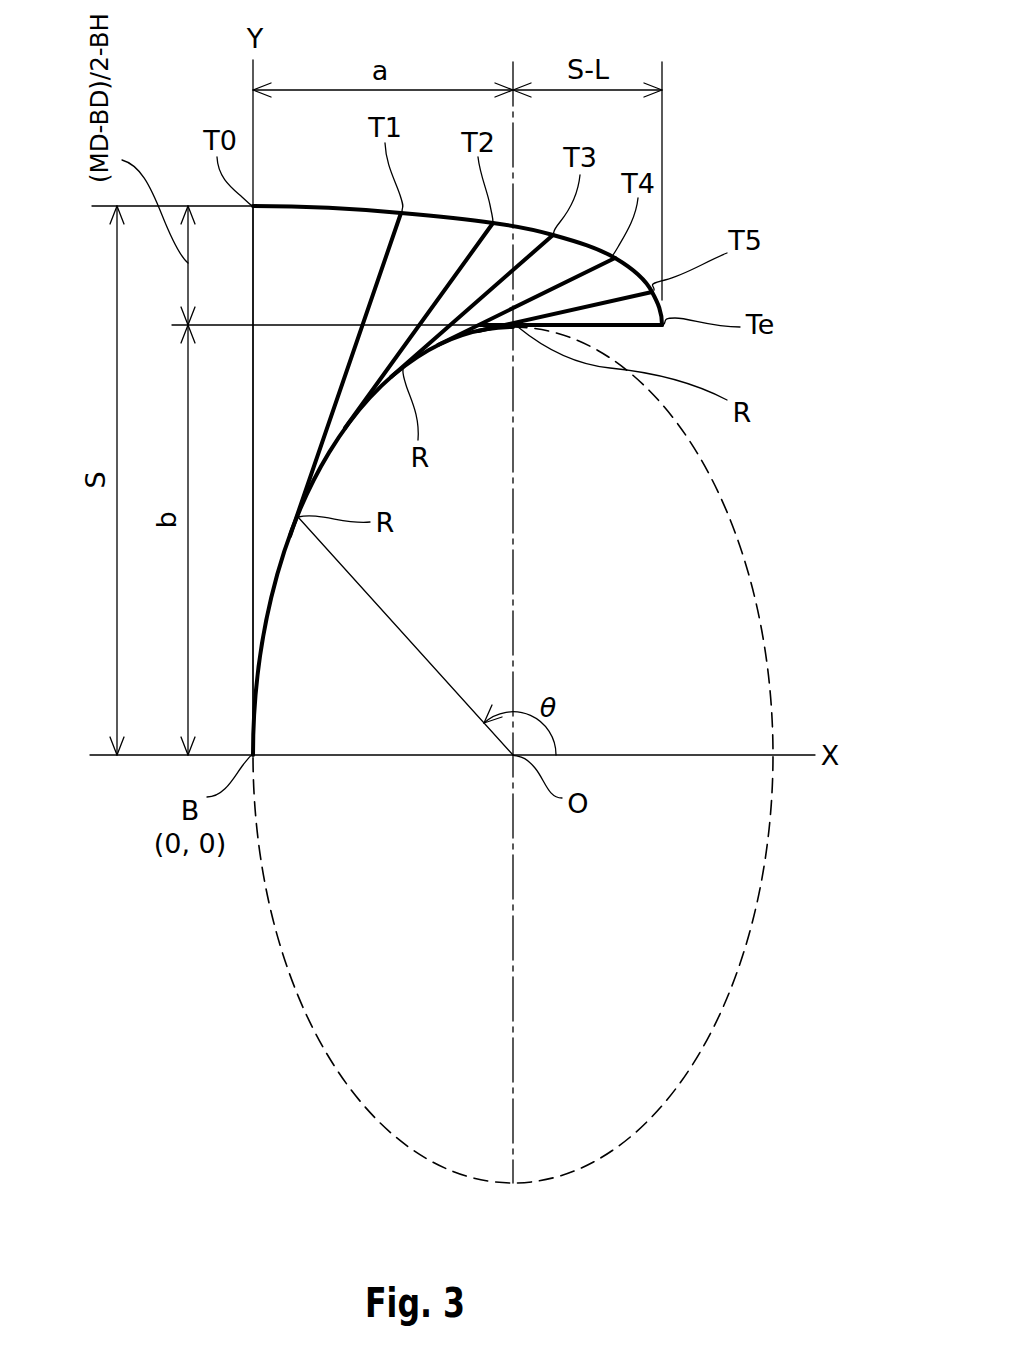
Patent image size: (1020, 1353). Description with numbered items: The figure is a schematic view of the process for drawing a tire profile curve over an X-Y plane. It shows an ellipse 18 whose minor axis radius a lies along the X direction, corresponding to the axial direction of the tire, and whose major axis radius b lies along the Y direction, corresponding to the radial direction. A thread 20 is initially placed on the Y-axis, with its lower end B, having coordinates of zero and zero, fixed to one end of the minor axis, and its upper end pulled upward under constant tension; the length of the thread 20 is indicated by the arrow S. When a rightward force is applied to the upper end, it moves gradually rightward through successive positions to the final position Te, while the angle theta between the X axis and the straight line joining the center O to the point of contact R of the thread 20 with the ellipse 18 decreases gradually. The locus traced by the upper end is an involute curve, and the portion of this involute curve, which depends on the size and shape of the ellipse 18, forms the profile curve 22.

The ellipse 18 is at (305, 1013).
The thread 20 is at (378, 274).
The profile curve 22 is at (452, 216).